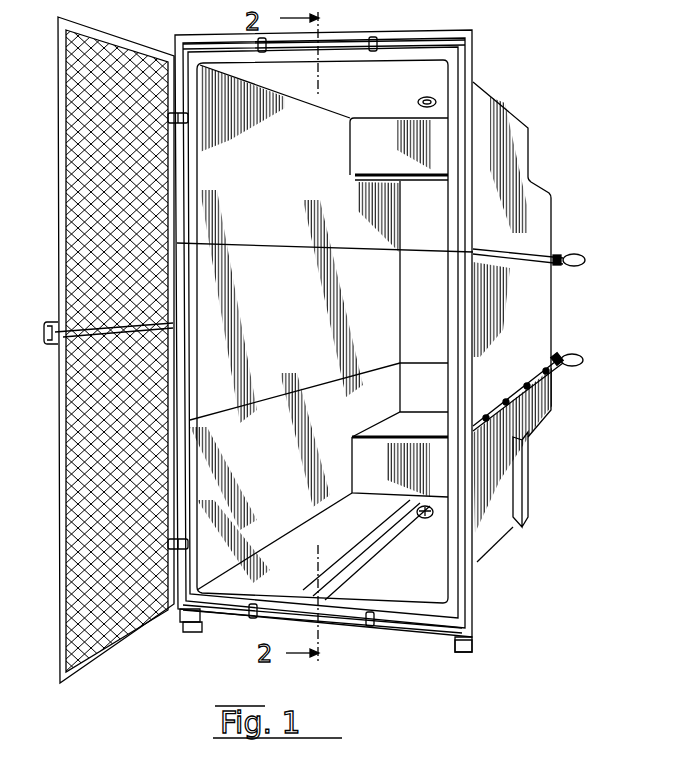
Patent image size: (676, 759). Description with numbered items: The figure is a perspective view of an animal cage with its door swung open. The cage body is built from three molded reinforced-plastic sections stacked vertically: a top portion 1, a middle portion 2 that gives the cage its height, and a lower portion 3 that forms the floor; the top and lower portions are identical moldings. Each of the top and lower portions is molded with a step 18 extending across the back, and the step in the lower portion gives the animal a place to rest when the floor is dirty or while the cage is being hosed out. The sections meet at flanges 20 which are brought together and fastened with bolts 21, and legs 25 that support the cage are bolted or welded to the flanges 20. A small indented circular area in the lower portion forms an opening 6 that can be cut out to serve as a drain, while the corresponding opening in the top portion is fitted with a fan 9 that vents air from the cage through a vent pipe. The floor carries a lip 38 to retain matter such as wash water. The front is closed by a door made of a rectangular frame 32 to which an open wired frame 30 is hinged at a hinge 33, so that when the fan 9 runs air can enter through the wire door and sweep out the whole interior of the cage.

The top portion 1 is at (534, 136).
The middle portion 2 is at (562, 325).
The lower portion 3 is at (519, 535).
The opening 6 is at (430, 518).
The fan 9 is at (418, 103).
The step 18 is at (357, 181).
The flanges 20 is at (396, 337).
The bolts 21 is at (556, 267).
The legs 25 is at (189, 632).
The wired frame 30 is at (78, 228).
The rectangular frame 32 is at (428, 627).
The hinge 33 is at (188, 119).
The lip 38 is at (407, 600).